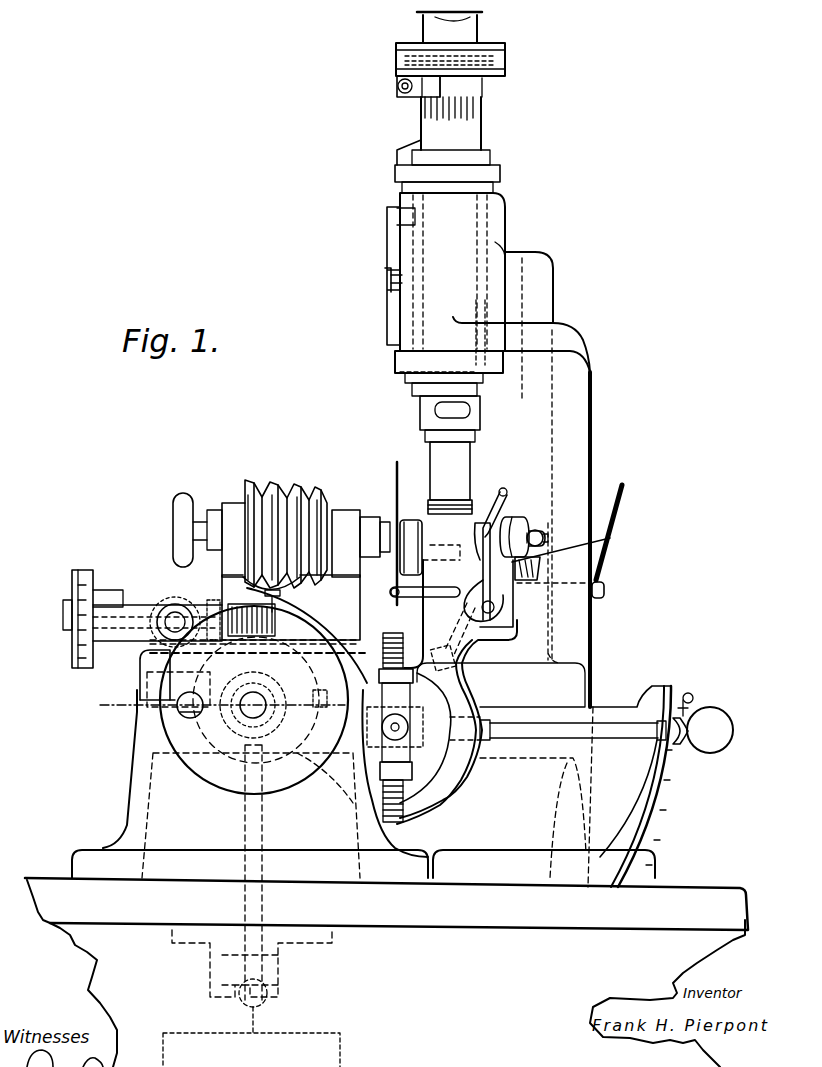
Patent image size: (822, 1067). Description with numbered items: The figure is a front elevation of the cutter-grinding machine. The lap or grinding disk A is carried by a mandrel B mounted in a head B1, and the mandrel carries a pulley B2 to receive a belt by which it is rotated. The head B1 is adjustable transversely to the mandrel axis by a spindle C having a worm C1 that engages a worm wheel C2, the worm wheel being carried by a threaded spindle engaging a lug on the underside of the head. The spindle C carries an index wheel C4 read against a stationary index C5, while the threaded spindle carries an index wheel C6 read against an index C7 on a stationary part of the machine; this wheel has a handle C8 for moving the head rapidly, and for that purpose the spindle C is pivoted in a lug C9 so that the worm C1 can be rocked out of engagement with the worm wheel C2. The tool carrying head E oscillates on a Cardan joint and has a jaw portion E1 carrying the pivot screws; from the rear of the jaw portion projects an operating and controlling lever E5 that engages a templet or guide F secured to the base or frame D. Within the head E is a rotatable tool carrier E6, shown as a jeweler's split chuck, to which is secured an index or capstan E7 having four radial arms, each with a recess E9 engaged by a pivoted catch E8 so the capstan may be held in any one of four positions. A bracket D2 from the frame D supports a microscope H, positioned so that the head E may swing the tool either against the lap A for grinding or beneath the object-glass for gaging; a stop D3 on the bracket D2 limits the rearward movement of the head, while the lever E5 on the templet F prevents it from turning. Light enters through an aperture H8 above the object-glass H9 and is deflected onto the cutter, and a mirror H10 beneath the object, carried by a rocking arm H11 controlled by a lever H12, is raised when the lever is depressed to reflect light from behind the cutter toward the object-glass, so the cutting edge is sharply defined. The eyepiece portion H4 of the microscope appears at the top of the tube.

The microscope H is at (468, 146).
The eyepiece cap H4 is at (505, 62).
The aperture H8 is at (440, 413).
The object-glass H9 is at (460, 505).
The mirror H10 is at (453, 650).
The rocking arm H11 is at (573, 592).
The lever H12 is at (617, 512).
The base or frame D is at (545, 798).
The bracket D2 is at (578, 373).
The stop D3 is at (633, 563).
The lap or grinding disk A is at (397, 470).
The mandrel B is at (326, 512).
The head B1 is at (352, 485).
The pulley B2 is at (258, 495).
The spindle C is at (381, 525).
The worm C1 is at (262, 624).
The worm wheel C2 is at (182, 722).
The index wheel C4 is at (74, 658).
The stationary index C5 is at (101, 539).
The index wheel C6 is at (205, 772).
The index C7 is at (225, 610).
The handle C8 is at (177, 712).
The lug C9 is at (166, 608).
The tool carrying head E is at (425, 584).
The jaw portion E1 is at (450, 692).
The operating and controlling lever E5 is at (604, 730).
The tool carrier E6 is at (412, 520).
The index or capstan E7 is at (510, 503).
The catch E8 is at (610, 538).
The recess E9 is at (478, 515).
The templet or guide F is at (672, 782).